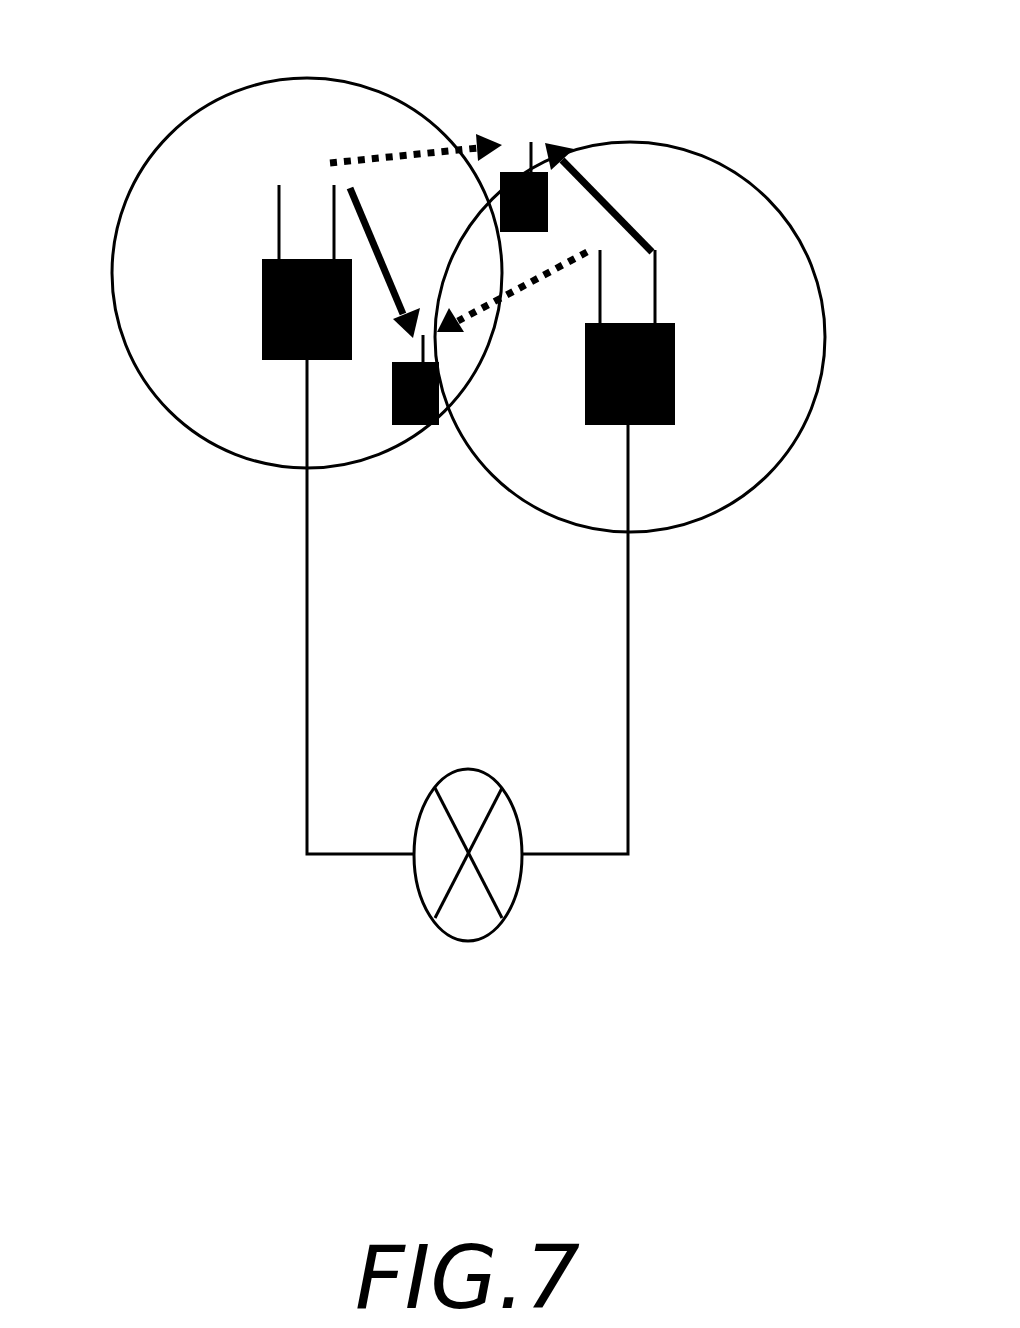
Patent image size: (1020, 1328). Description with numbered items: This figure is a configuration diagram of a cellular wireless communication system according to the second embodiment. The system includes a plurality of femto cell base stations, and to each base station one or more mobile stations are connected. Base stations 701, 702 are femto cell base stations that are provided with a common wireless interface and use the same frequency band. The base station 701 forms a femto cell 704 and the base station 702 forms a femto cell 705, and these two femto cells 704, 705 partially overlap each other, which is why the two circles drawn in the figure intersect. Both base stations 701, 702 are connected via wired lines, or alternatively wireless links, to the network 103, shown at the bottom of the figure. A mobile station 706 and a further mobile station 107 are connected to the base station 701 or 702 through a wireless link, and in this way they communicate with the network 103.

The femto cell 704 is at (200, 122).
The femto cell 705 is at (758, 188).
The base station 701 is at (263, 265).
The base station 702 is at (676, 345).
The tag 107 is at (522, 143).
The mobile station 706 is at (418, 425).
The network 103 is at (458, 767).